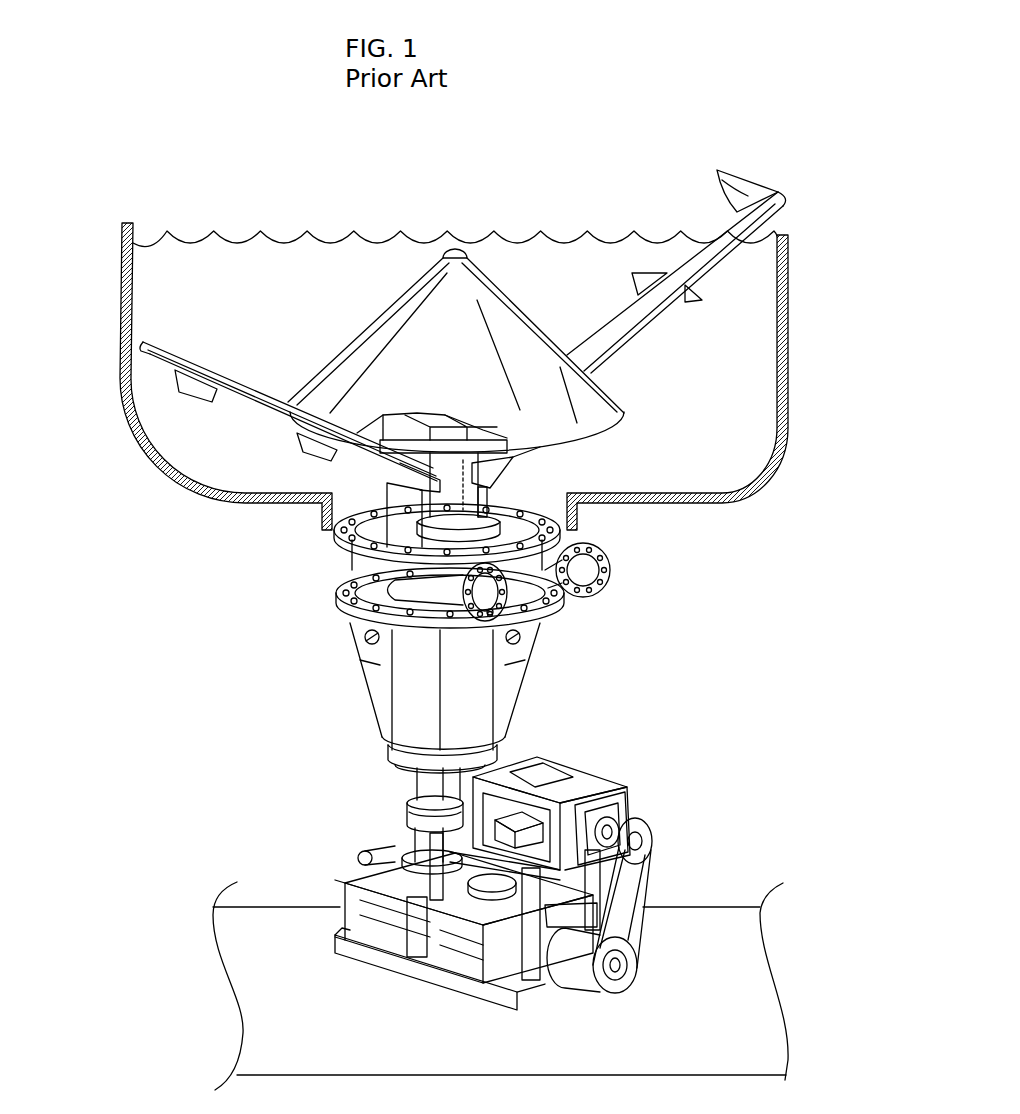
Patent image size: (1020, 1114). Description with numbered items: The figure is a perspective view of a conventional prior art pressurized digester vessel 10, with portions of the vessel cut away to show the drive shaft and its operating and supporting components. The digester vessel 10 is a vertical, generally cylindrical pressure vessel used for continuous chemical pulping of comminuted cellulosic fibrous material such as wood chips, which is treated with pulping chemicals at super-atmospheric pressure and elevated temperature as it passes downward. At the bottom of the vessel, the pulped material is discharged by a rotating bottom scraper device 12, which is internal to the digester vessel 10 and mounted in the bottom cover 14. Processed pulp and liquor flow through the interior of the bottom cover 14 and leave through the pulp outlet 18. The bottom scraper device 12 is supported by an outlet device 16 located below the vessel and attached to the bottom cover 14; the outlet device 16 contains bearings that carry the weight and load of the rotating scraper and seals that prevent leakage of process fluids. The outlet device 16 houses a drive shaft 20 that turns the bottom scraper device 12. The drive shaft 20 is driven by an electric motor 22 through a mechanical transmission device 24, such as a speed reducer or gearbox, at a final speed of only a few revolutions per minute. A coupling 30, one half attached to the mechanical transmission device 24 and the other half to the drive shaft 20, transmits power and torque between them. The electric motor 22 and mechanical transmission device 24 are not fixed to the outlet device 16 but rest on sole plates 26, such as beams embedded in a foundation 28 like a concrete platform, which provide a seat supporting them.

The pressurized digester vessel 10 is at (122, 283).
The bottom scraper device 12 is at (663, 317).
The bottom cover 14 is at (557, 523).
The outlet device 16 is at (353, 627).
The pulp outlet 18 is at (590, 574).
The drive shaft 20 is at (466, 502).
The electric motor 22 is at (603, 778).
The mechanical transmission device 24 is at (452, 958).
The sole plates 26 is at (517, 1010).
The foundation 28 is at (746, 967).
The coupling 30 is at (407, 820).